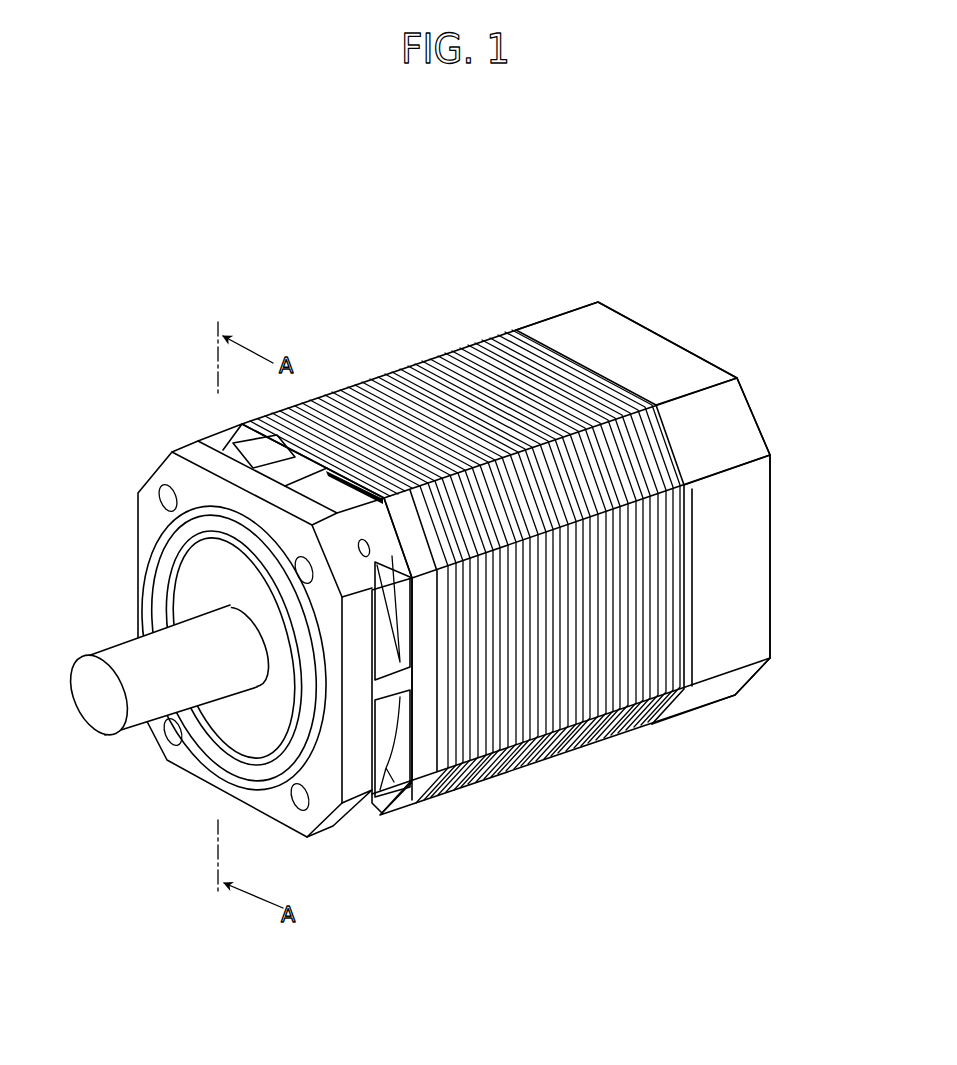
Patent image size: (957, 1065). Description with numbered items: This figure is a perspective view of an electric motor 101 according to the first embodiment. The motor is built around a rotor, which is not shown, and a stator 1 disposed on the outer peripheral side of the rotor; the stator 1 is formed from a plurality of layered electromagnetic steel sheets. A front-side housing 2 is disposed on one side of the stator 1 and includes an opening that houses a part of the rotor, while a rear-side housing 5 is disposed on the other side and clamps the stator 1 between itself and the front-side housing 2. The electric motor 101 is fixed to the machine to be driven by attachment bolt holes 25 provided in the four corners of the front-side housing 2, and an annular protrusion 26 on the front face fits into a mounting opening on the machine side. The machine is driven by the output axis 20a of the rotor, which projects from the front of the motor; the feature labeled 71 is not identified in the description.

The electric motor 101 is at (531, 274).
The stator 1 is at (568, 382).
The front-side housing 2 is at (318, 472).
The rear-side housing 5 is at (750, 552).
The attachment bolt holes 25 is at (303, 556).
The annular protrusion 26 is at (145, 557).
The boss 71 is at (193, 589).
The output axis 20a is at (138, 717).